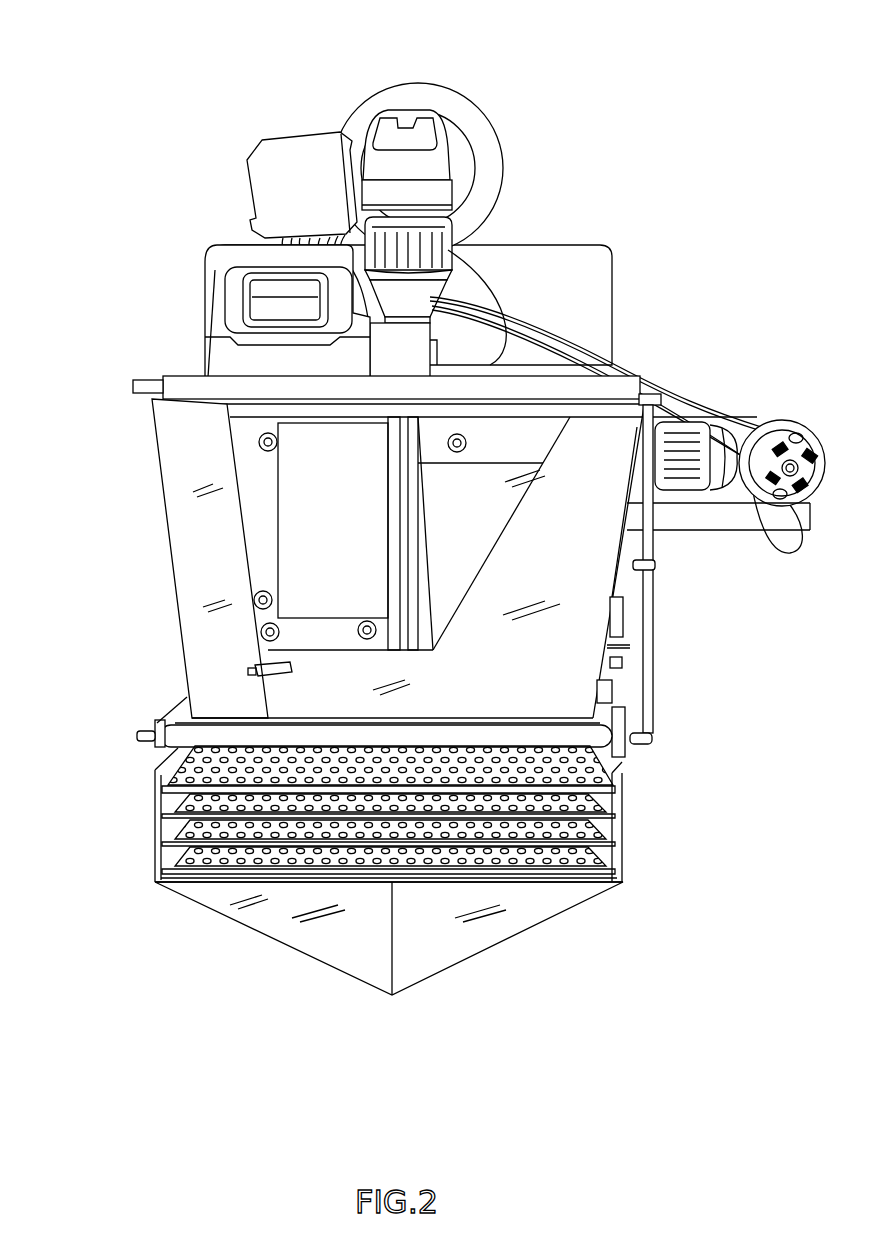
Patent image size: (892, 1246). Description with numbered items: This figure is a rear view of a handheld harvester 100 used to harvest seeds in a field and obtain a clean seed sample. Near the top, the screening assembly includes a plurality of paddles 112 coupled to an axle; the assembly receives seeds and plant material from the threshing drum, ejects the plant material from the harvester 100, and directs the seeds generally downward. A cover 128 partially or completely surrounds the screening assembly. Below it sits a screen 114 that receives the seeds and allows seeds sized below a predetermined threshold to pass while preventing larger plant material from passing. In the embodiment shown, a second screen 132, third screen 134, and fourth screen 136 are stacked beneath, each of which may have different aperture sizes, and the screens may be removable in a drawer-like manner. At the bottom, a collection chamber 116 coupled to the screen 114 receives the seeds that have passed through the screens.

The harvester 100 is at (137, 48).
The paddles 112 is at (263, 498).
The cover 128 is at (192, 600).
The screen 114 is at (178, 712).
The second screen 132 is at (603, 787).
The third screen 134 is at (603, 817).
The fourth screen 136 is at (603, 873).
The collection chamber 116 is at (497, 947).